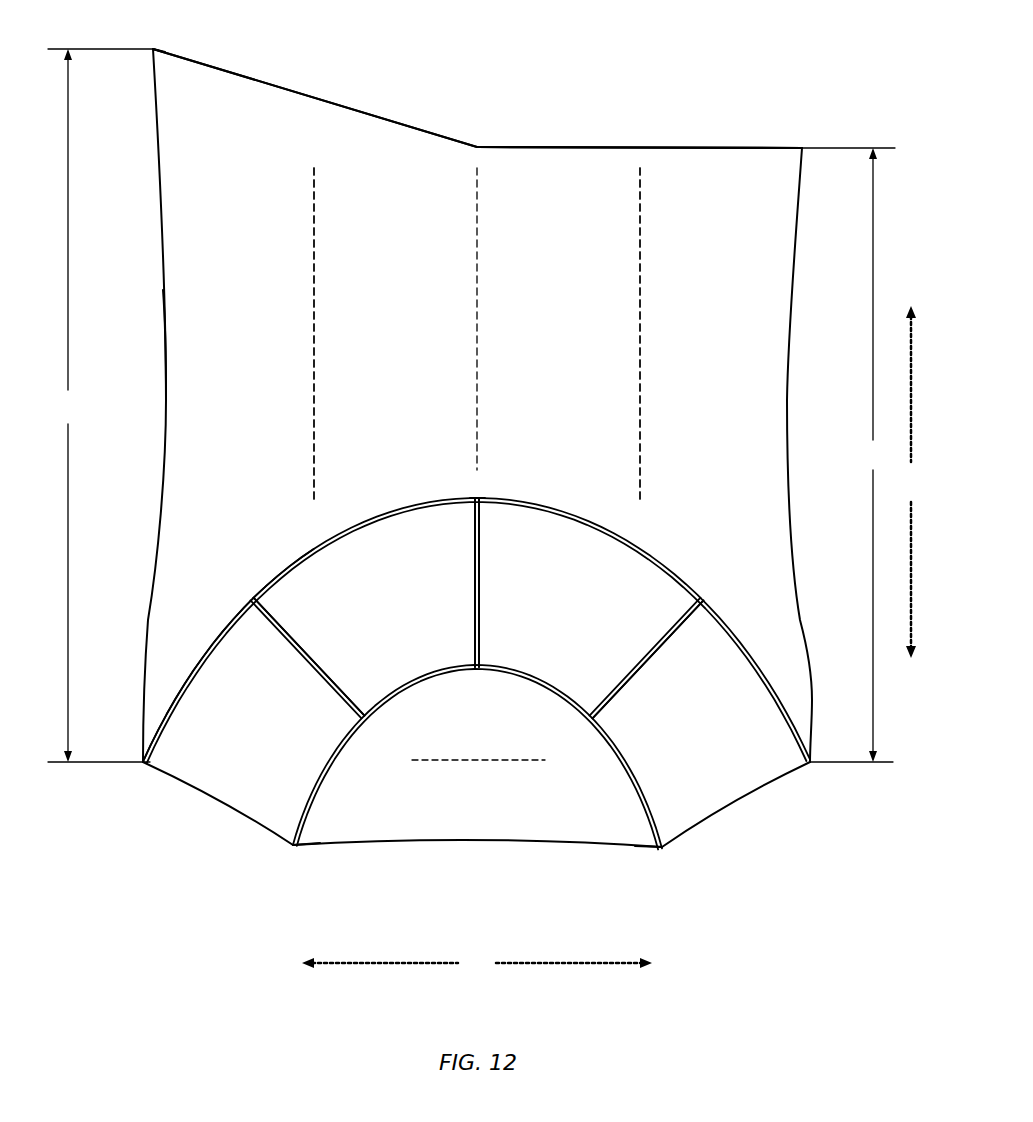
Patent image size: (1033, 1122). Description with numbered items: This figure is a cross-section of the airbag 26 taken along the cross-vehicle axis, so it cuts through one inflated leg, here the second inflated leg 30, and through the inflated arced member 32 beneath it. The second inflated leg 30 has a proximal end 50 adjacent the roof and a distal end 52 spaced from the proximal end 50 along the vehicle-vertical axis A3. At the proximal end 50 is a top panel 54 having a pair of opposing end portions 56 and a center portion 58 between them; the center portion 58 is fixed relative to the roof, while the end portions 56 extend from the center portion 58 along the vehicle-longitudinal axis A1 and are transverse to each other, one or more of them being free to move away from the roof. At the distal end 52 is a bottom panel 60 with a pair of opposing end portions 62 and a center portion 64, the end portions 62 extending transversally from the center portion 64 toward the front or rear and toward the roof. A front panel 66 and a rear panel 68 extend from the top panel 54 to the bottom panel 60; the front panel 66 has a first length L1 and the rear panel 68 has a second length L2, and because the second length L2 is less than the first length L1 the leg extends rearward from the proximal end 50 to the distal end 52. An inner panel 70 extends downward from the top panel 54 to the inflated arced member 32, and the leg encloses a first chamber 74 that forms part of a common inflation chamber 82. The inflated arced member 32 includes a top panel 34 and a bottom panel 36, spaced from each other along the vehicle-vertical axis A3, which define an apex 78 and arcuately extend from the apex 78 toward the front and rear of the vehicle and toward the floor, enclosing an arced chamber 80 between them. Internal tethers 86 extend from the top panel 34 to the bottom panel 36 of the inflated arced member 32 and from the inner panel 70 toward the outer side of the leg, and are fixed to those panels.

The airbag 26 is at (133, 178).
The second inflated leg 30 is at (193, 292).
The inflated arced member 32 is at (278, 578).
The top panel 34 is at (518, 500).
The bottom panel 36 is at (530, 682).
The proximal end 50 is at (424, 184).
The distal end 52 is at (358, 780).
The top panel 54 is at (300, 78).
The end portions 56 is at (153, 48).
The center portion 58 is at (478, 147).
The bottom panel 60 is at (620, 848).
The end portions 62 is at (228, 806).
The center portion 64 is at (490, 845).
The front panel 66 is at (166, 380).
The rear panel 68 is at (787, 378).
The inner panel 70 is at (385, 292).
The first chamber 74 is at (723, 290).
The apex 78 is at (476, 497).
The arced chamber 80 is at (370, 614).
The common inflation chamber 82 is at (560, 614).
The internal tethers 86 is at (481, 560).
The first length L1 is at (100, 405).
The second length L2 is at (848, 455).
The vehicle-vertical axis A3 is at (910, 482).
The vehicle-longitudinal axis A1 is at (477, 963).